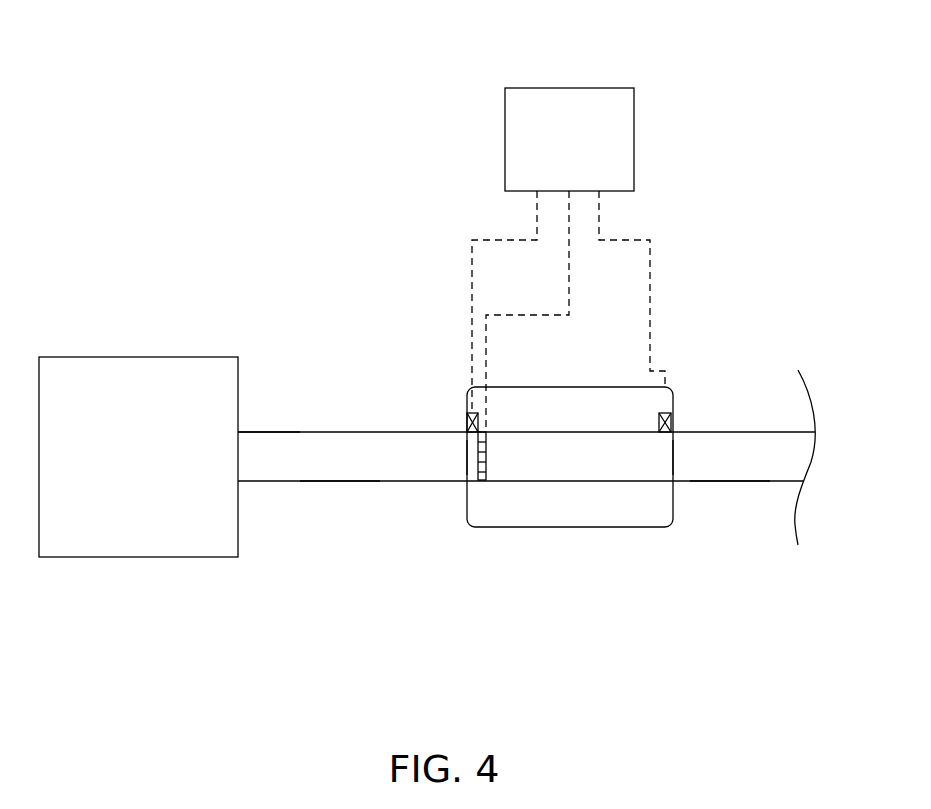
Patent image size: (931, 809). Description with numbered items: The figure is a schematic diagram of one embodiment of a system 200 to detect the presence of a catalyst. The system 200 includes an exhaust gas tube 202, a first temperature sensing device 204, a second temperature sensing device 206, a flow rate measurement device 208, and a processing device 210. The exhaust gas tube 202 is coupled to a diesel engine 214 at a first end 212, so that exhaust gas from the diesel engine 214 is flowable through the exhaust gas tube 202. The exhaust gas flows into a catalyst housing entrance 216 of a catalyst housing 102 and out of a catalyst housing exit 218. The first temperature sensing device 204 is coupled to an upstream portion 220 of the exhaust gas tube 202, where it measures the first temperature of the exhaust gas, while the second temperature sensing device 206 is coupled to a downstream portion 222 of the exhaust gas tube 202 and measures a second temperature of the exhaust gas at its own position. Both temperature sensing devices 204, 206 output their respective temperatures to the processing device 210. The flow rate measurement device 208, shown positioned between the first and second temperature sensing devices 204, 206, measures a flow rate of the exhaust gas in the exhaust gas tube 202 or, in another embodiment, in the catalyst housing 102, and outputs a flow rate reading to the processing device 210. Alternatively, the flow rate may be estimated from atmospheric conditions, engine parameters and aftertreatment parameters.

The system 200 is at (304, 123).
The catalyst housing 102 is at (569, 386).
The exhaust gas tube 202 is at (294, 500).
The first temperature sensing device 204 is at (470, 412).
The second temperature sensing device 206 is at (668, 412).
The flow rate measurement device 208 is at (483, 481).
The processing device 210 is at (587, 150).
The first end 212 is at (240, 417).
The diesel engine 214 is at (158, 469).
The catalyst housing entrance 216 is at (463, 458).
The catalyst housing exit 218 is at (673, 458).
The upstream portion 220 is at (338, 482).
The downstream portion 222 is at (725, 482).